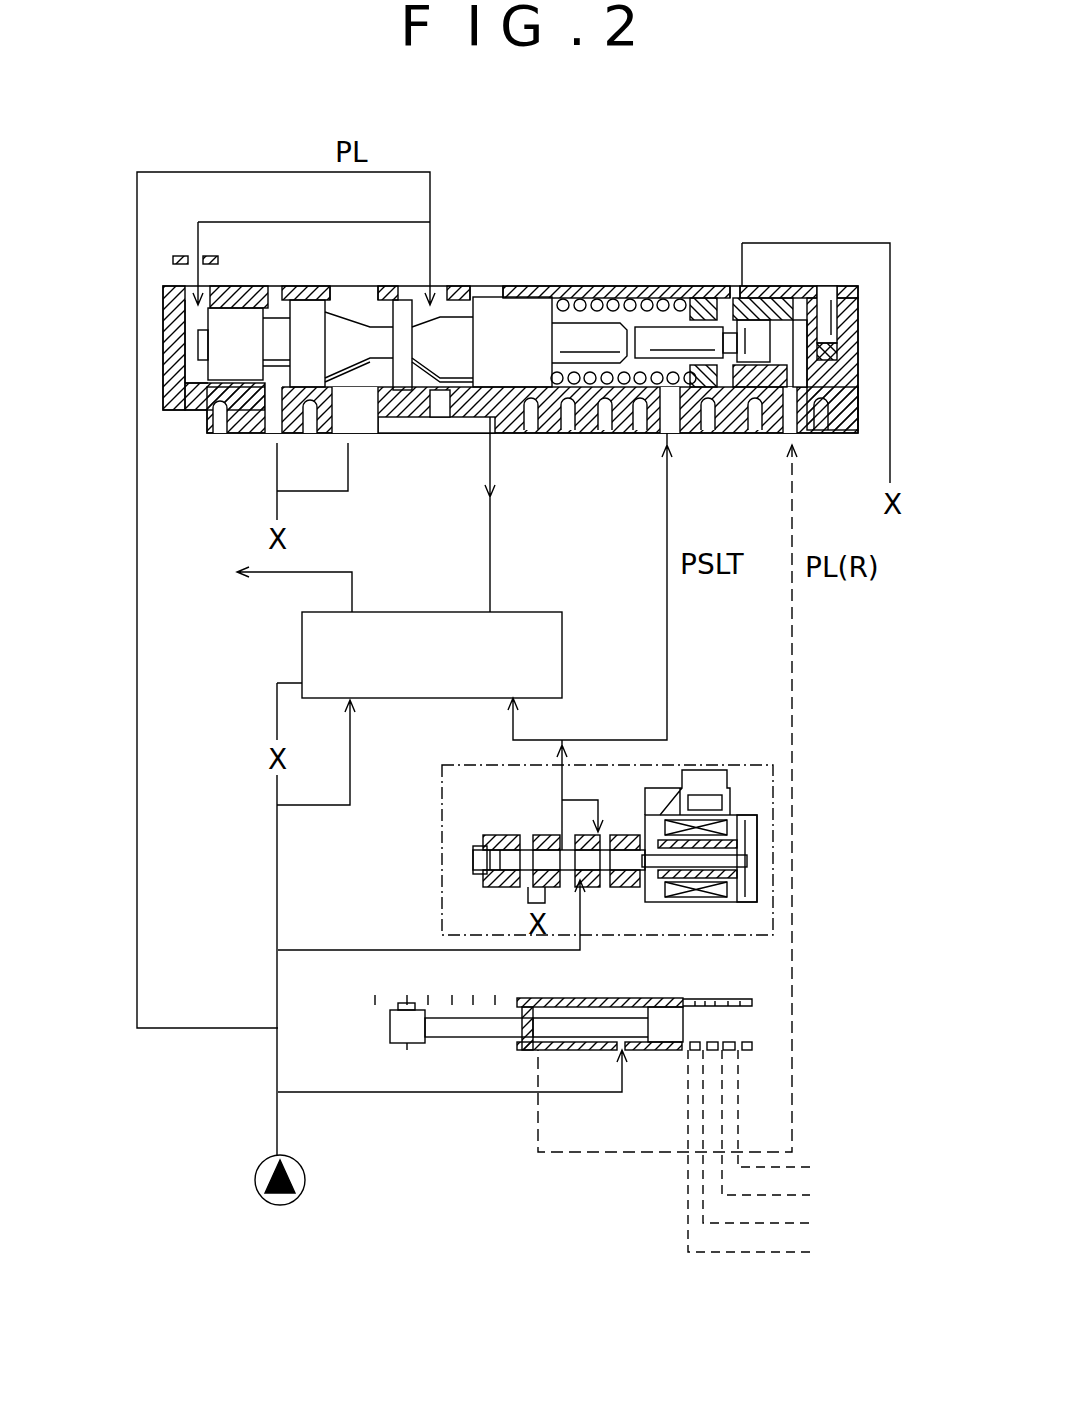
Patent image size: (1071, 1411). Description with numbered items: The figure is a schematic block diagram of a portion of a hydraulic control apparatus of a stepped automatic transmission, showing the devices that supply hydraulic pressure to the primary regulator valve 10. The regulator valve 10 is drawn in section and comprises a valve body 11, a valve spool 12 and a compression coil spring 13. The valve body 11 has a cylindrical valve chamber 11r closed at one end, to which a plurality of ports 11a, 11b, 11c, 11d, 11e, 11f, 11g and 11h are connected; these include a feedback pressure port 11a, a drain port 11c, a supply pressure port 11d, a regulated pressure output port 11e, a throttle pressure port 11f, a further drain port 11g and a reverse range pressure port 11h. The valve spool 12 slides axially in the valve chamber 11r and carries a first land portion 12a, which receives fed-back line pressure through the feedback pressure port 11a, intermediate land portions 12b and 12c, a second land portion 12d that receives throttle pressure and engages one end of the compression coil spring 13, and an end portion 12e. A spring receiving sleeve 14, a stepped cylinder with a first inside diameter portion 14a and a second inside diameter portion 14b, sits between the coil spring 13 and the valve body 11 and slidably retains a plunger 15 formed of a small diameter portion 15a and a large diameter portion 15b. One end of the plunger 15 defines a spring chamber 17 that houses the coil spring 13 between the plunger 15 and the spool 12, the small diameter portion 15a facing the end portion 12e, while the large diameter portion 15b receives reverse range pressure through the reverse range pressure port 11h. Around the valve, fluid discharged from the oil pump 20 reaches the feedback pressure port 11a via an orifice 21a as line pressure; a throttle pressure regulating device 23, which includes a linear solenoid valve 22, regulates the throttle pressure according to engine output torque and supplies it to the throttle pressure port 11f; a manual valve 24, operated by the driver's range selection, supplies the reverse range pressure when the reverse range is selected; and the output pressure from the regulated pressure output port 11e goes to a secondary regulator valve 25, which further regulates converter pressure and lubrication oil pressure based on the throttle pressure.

The regulator valve 10 is at (510, 214).
The valve body 11 is at (163, 383).
The feedback pressure port 11a is at (190, 298).
The port 11b is at (255, 400).
The drain port 11c is at (366, 428).
The supply pressure port 11d is at (445, 295).
The regulated pressure output port 11e is at (467, 420).
The throttle pressure port 11f is at (685, 433).
The drain port 11g is at (730, 290).
The reverse range pressure port 11h is at (798, 433).
The valve chamber 11r is at (347, 295).
The valve spool 12 is at (430, 395).
The first land portion 12a is at (228, 318).
The land portion 12b is at (308, 310).
The land portion 12c is at (408, 420).
The second land portion 12d is at (523, 320).
The end portion of the valve spool 12e is at (580, 433).
The compression coil spring 13 is at (585, 300).
The spring receiving sleeve 14 is at (860, 305).
The first inside diameter portion 14a is at (632, 433).
The second inside diameter portion 14b is at (775, 300).
The plunger 15 is at (688, 395).
The small diameter portion 15a is at (660, 333).
The large diameter portion 15b is at (790, 330).
The spring chamber 17 is at (607, 300).
The oil pump 20 is at (306, 1172).
The orifice 21a is at (192, 258).
The linear solenoid valve 22 is at (757, 808).
The throttle pressure regulating device 23 is at (722, 765).
The manual valve 24 is at (665, 998).
The secondary regulator valve 25 is at (545, 612).